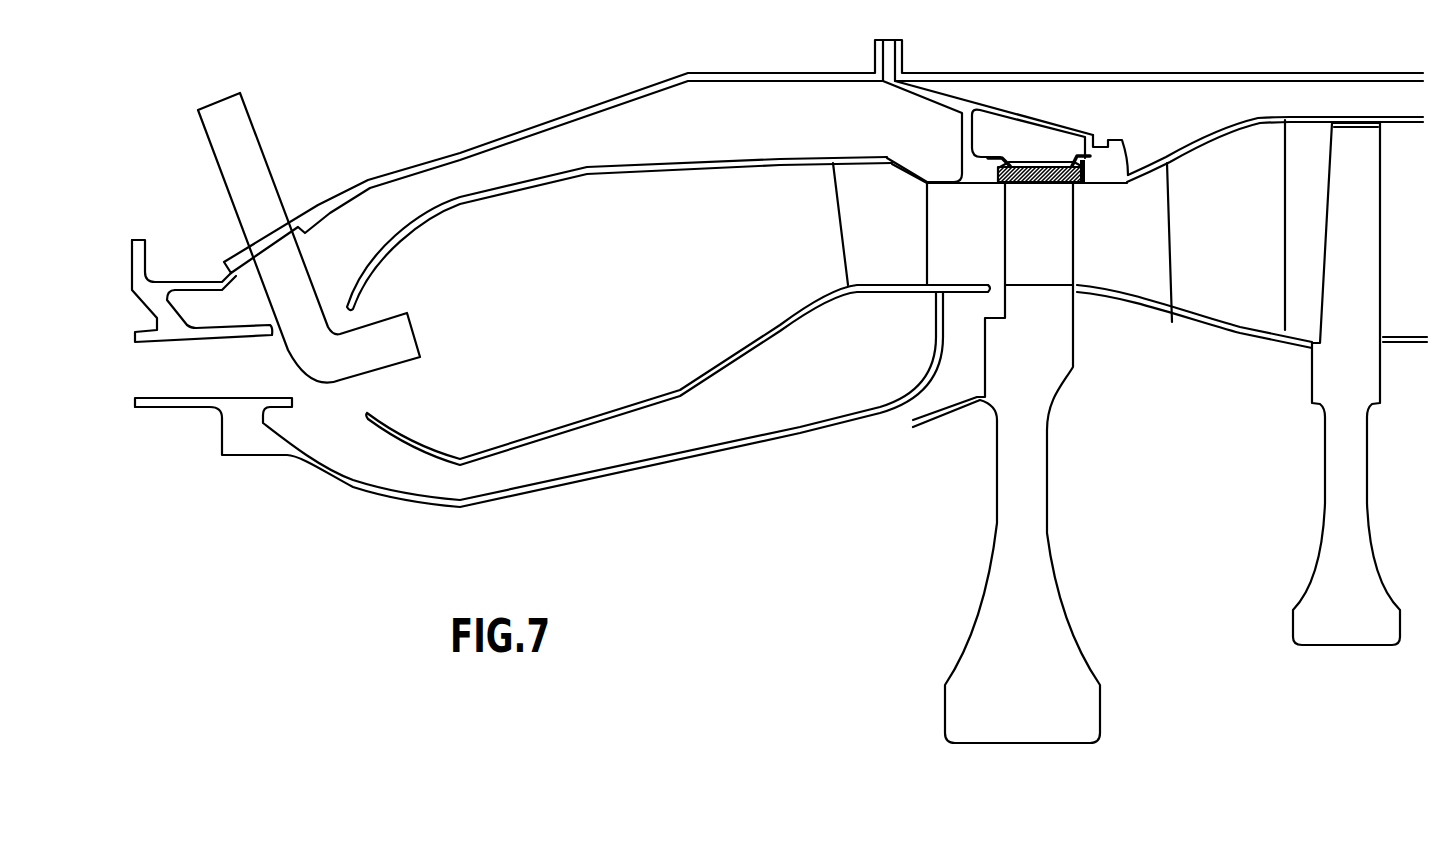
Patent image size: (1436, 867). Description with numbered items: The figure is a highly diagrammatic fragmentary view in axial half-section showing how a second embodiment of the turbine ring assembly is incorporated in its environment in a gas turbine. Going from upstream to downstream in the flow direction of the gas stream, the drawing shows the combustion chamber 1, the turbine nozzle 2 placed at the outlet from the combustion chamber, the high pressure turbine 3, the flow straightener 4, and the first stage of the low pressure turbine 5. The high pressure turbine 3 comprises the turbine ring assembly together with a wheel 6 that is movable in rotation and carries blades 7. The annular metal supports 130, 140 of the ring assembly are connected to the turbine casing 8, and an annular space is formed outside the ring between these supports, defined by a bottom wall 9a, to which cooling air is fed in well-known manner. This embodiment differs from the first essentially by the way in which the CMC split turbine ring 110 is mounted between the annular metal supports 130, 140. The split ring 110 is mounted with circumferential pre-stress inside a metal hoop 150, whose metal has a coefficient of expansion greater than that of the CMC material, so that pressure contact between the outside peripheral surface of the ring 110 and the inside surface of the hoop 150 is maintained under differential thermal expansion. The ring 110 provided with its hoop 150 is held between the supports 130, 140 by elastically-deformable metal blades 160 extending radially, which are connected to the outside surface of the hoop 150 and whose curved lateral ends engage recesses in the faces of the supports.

The combustion chamber 1 is at (735, 160).
The turbine nozzle 2 is at (887, 173).
The high pressure (HP) turbine 3 is at (1080, 196).
The flow straightener 4 is at (1227, 160).
The first stage of a low pressure (LP) turbine 5 is at (1352, 143).
The wheel 6 is at (1073, 365).
The blades 7 is at (1043, 248).
The turbine casing 8 is at (1200, 73).
The bottom wall 9a is at (1007, 117).
The CMC split turbine ring 110 is at (1035, 182).
The annular metal support 130 is at (972, 167).
The annular metal support 140 is at (1103, 168).
The metal hoop 150 is at (1040, 162).
The elastically-deformable metal blades 160 is at (1010, 158).